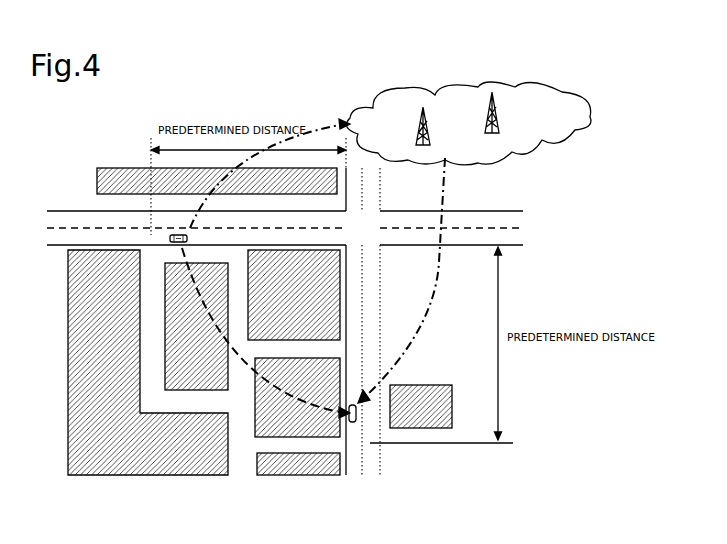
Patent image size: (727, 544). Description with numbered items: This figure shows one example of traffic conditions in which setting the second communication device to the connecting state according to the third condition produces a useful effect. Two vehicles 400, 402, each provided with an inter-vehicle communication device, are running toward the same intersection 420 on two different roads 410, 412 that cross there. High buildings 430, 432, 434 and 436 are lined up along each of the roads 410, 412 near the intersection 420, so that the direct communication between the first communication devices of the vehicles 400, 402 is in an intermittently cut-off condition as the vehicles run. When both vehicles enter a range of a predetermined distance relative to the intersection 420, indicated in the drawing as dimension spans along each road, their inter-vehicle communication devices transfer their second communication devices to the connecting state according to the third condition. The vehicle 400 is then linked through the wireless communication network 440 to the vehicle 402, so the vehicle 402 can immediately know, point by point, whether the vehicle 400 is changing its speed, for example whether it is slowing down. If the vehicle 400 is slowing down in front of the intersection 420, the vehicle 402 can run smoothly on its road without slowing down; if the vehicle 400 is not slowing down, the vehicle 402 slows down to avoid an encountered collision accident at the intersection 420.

The vehicle 400 is at (176, 233).
The vehicle 402 is at (360, 417).
The road 410 is at (85, 222).
The road 412 is at (373, 313).
The intersection 420 is at (365, 229).
The high building 430 is at (92, 467).
The high building 432 is at (165, 373).
The high building 434 is at (255, 396).
The high building 436 is at (300, 250).
The wireless communication network 440 is at (377, 90).